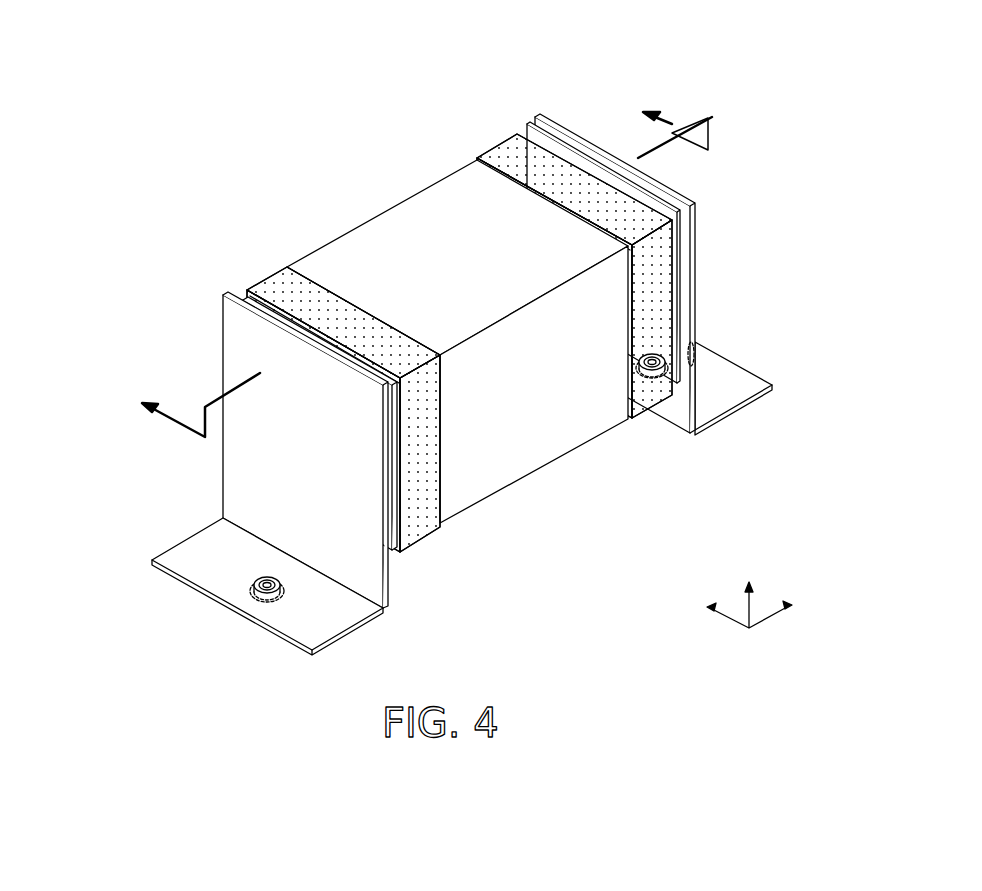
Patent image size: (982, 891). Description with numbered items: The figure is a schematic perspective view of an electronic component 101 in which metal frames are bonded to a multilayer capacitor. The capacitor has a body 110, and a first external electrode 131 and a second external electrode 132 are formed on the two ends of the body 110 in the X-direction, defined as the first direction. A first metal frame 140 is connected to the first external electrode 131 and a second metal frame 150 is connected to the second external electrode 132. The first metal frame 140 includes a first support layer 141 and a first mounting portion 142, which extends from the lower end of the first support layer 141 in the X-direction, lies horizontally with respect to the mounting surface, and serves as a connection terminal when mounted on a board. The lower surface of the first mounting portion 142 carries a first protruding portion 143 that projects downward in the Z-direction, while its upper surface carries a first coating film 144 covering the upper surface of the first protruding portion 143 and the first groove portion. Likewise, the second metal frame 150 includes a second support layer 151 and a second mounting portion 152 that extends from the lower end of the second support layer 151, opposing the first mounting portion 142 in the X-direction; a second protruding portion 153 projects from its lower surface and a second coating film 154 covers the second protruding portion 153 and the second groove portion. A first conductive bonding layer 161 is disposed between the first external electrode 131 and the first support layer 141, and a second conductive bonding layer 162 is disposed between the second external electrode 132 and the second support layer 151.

The electronic component 101 is at (292, 27).
The body 110 is at (393, 227).
The first external electrode 131 is at (272, 287).
The second external electrode 132 is at (508, 153).
The first metal frame 140 is at (93, 445).
The first support layer 141 is at (252, 468).
The first mounting portion 142 is at (192, 555).
The first protruding portion 143 is at (263, 580).
The first coating film 144 is at (252, 577).
The second metal frame 150 is at (826, 354).
The second support layer 151 is at (695, 372).
The second mounting portion 152 is at (708, 403).
The second protruding portion 153 is at (680, 345).
The second coating film 154 is at (649, 352).
The first conductive bonding layer 161 is at (390, 500).
The second conductive bonding layer 162 is at (675, 243).